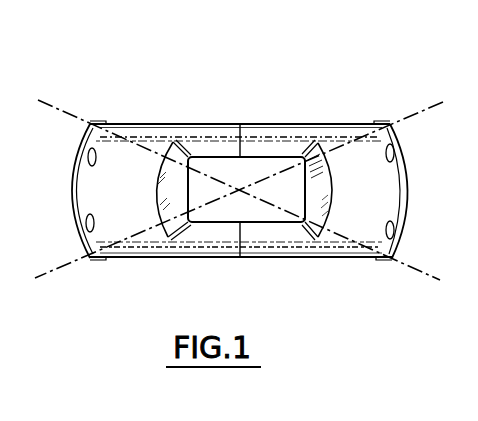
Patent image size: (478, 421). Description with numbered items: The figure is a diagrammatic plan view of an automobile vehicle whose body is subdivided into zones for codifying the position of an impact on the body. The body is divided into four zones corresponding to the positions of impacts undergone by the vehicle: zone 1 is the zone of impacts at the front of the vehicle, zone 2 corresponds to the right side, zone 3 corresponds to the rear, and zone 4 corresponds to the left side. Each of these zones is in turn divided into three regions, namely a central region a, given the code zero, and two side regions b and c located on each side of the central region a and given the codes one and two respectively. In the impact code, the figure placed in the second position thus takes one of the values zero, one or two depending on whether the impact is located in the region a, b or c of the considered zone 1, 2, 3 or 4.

The zone 1 is at (59, 191).
The zone 2 is at (240, 108).
The zone 3 is at (419, 191).
The zone 4 is at (241, 277).
The central region a is at (231, 191).
The side region b is at (239, 189).
The side region c is at (239, 191).